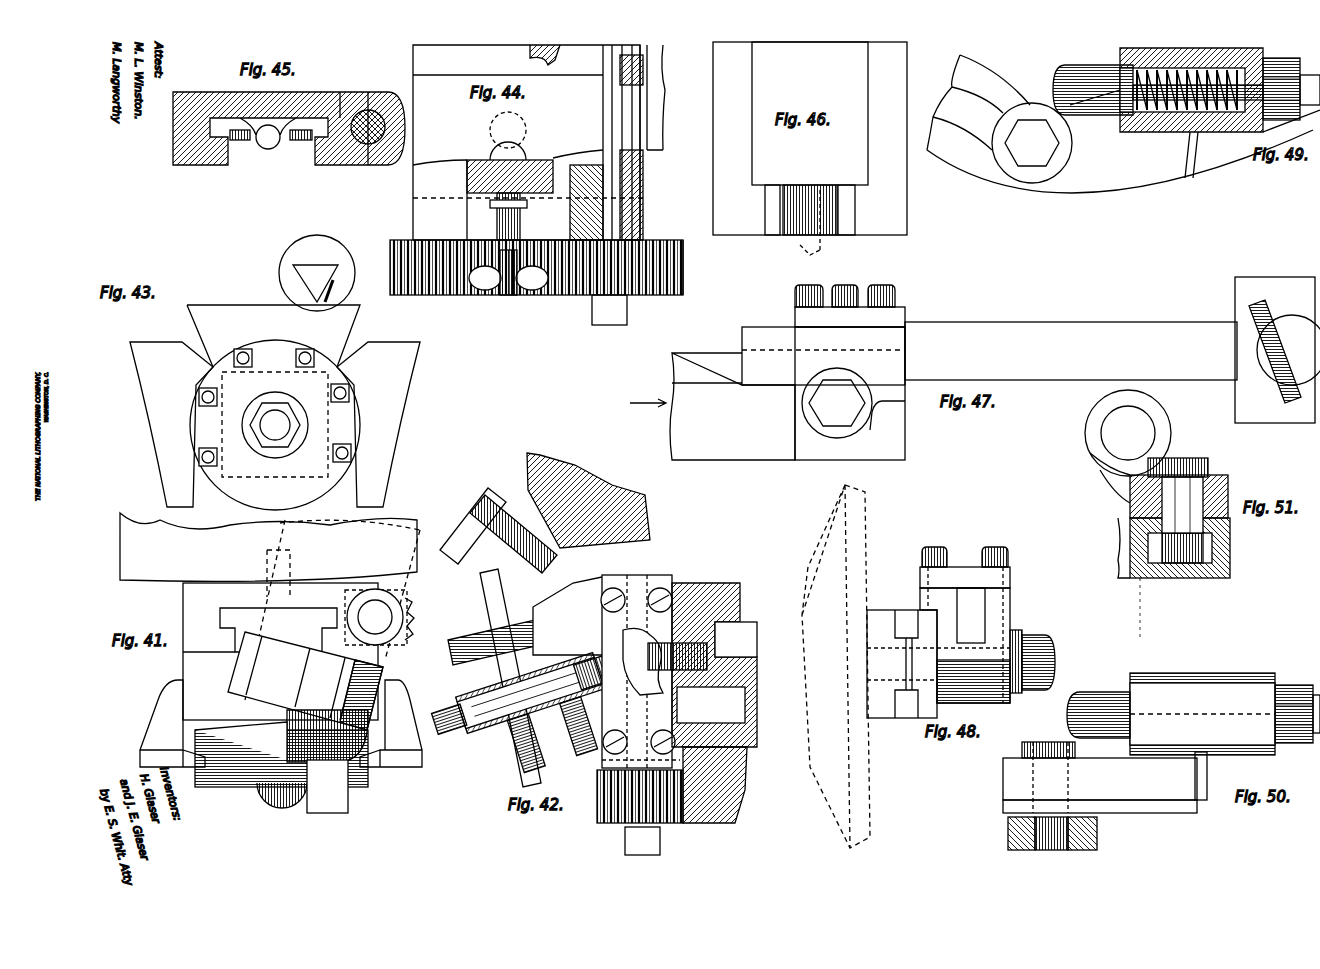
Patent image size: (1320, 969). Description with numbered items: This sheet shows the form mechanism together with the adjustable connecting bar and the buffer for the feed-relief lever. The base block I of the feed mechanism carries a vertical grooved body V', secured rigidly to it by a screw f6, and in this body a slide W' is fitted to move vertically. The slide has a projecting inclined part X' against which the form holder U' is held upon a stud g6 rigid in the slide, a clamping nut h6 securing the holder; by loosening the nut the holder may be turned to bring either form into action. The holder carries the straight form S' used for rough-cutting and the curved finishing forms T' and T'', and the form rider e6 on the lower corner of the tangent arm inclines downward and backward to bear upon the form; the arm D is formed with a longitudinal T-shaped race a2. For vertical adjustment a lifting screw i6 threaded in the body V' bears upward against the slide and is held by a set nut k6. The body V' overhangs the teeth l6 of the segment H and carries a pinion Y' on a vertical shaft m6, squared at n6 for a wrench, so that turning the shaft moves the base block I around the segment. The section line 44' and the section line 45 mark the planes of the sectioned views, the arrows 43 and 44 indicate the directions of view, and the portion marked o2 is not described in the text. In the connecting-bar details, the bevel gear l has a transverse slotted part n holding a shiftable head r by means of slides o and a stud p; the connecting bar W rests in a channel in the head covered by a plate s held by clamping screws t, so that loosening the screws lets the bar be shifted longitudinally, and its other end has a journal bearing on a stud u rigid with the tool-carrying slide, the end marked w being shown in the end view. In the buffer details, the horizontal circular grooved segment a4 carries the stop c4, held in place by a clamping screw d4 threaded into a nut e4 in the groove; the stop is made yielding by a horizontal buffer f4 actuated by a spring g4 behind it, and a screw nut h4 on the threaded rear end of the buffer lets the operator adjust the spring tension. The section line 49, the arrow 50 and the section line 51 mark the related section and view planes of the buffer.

In FIG. 45, the vertical grooved body V' is at (289, 113).
In FIG. 44, the vertical grooved body V' is at (528, 200).
In FIG. 41, the vertical grooved body V' is at (280, 651).
In FIG. 42, the vertical grooved body V' is at (640, 671).
In FIG. 45, the section line 44' is at (338, 90).
In FIG. 45, the lifting screw i6 is at (268, 142).
In FIG. 44, the lifting screw i6 is at (536, 290).
In FIG. 46, the lifting screw i6 is at (800, 255).
In FIG. 45, the vertical shaft m6 is at (368, 143).
In FIG. 44, the vertical shaft m6 is at (643, 165).
In FIG. 41, the vertical shaft m6 is at (376, 617).
In FIG. 44, the projecting inclined part X' is at (526, 142).
In FIG. 41, the projecting inclined part X' is at (206, 678).
In FIG. 42, the projecting inclined part X' is at (567, 616).
In FIG. 44, the slide W' is at (508, 152).
In FIG. 46, the slide W' is at (810, 138).
In FIG. 41, the slide W' is at (278, 630).
In FIG. 42, the slide W' is at (643, 661).
In FIG. 44, the base block I is at (656, 97).
In FIG. 41, the base block I is at (270, 547).
In FIG. 42, the base block I is at (738, 590).
In FIG. 44, the section line 45 is at (433, 170).
In FIG. 44, the set nut k6 is at (497, 238).
In FIG. 44, the segment H is at (462, 292).
In FIG. 42, the segment H is at (738, 795).
In FIG. 44, the pinion Y' is at (576, 305).
In FIG. 41, the pinion Y' is at (421, 619).
In FIG. 44, the squared end n6 is at (609, 310).
In FIG. 42, the squared end n6 is at (642, 841).
In FIG. 44, the teeth l6 is at (660, 292).
In FIG. 42, the teeth l6 is at (695, 745).
In FIG. 49, the buffer f4 is at (1082, 62).
In FIG. 51, the buffer f4 is at (1128, 433).
In FIG. 50, the buffer f4 is at (1092, 700).
In FIG. 49, the screw nut h4 is at (1283, 60).
In FIG. 50, the screw nut h4 is at (1292, 690).
In FIG. 49, the circular grooved segment a4 is at (978, 105).
In FIG. 51, the circular grooved segment a4 is at (1120, 546).
In FIG. 49, the clamping screw d4 is at (1032, 143).
In FIG. 51, the clamping screw d4 is at (1186, 458).
In FIG. 50, the clamping screw d4 is at (1042, 745).
In FIG. 49, the stop c4 is at (1123, 141).
In FIG. 51, the stop c4 is at (1159, 485).
In FIG. 50, the stop c4 is at (1105, 777).
In FIG. 49, the spring g4 is at (1190, 132).
In FIG. 49, the view arrow 50 is at (1191, 207).
In FIG. 49, the section line 51 is at (1038, 220).
In FIG. 43, the form rider e6 is at (317, 273).
In FIG. 41, the form rider e6 is at (327, 786).
In FIG. 42, the form rider e6 is at (498, 530).
In FIG. 43, the form S' is at (273, 336).
In FIG. 41, the form S' is at (281, 764).
In FIG. 42, the form S' is at (494, 678).
In FIG. 43, the curved form T' is at (275, 424).
In FIG. 41, the curved form T' is at (281, 723).
In FIG. 41, the side bracket T'' is at (391, 721).
In FIG. 43, the form holder U' is at (275, 425).
In FIG. 41, the form holder U' is at (303, 757).
In FIG. 42, the form holder U' is at (510, 778).
In FIG. 43, the clamping nut h6 is at (255, 437).
In FIG. 41, the clamping nut h6 is at (284, 798).
In FIG. 42, the clamping nut h6 is at (470, 732).
In FIG. 43, the stud g6 is at (275, 425).
In FIG. 42, the stud g6 is at (545, 716).
In FIG. 41, the screw f6 is at (285, 560).
In FIG. 42, the screw f6 is at (688, 672).
In FIG. 41, the arm D is at (305, 681).
In FIG. 42, the arm D is at (640, 512).
In FIG. 41, the T-shaped race a2 is at (347, 695).
In FIG. 42, the view arrow 44 is at (448, 668).
In FIG. 42, the view arrow 43 is at (482, 779).
In FIG. 42, the recess o2 is at (736, 639).
In FIG. 47, the transverse slotted part n is at (732, 406).
In FIG. 48, the transverse slotted part n is at (910, 620).
In FIG. 47, the shiftable head r is at (823, 393).
In FIG. 48, the shiftable head r is at (965, 635).
In FIG. 47, the plate s is at (850, 317).
In FIG. 48, the plate s is at (965, 577).
In FIG. 47, the clamping screws t is at (880, 285).
In FIG. 48, the clamping screws t is at (984, 560).
In FIG. 47, the stud p is at (837, 403).
In FIG. 48, the stud p is at (1030, 634).
In FIG. 47, the slides o is at (885, 446).
In FIG. 48, the slides o is at (906, 663).
In FIG. 47, the connecting bar W is at (1071, 351).
In FIG. 47, the stud u is at (1277, 350).
In FIG. 51, the nut e4 is at (1230, 546).
In FIG. 50, the nut e4 is at (1008, 828).
In FIG. 48, the key w is at (971, 615).
In FIG. 48, the bevel gear l is at (858, 808).
In FIG. 50, the section line 49 is at (1202, 714).